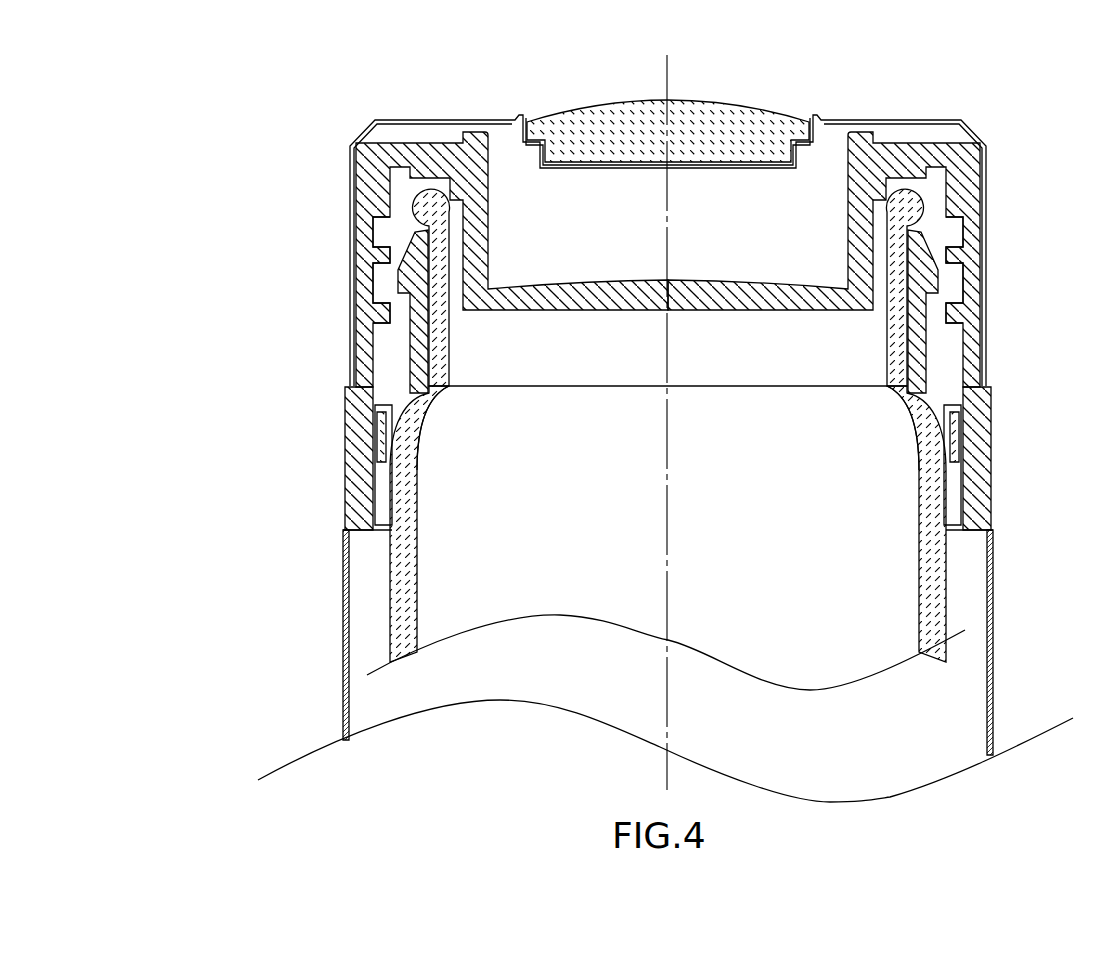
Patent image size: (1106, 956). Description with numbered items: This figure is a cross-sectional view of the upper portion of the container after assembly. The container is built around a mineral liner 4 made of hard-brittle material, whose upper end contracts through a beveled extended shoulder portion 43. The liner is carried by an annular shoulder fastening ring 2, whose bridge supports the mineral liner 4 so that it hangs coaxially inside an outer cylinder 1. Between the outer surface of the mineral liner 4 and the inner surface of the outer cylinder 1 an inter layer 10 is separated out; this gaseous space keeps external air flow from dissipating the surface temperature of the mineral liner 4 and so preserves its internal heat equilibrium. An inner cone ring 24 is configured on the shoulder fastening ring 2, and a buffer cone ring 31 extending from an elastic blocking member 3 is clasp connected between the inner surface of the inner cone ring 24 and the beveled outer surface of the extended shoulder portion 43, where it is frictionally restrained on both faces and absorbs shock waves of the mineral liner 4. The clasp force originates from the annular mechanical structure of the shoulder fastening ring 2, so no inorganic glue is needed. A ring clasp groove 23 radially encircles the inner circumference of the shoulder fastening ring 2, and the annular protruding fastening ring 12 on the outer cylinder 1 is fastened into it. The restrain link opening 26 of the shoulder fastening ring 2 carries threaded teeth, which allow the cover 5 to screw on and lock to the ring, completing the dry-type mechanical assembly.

The outer cylinder 1 is at (341, 662).
The inter layer 10 is at (363, 620).
The fastening ring 12 is at (392, 503).
The shoulder fastening ring 2 is at (314, 397).
The ring clasp groove 23 is at (365, 500).
The inner cone ring 24 is at (927, 385).
The restrain link opening 26 is at (380, 347).
The elastic blocking member 3 is at (420, 310).
The buffer cone ring 31 is at (422, 390).
The mineral liner 4 is at (417, 553).
The extended shoulder portion 43 is at (428, 413).
The cover 5 is at (467, 118).